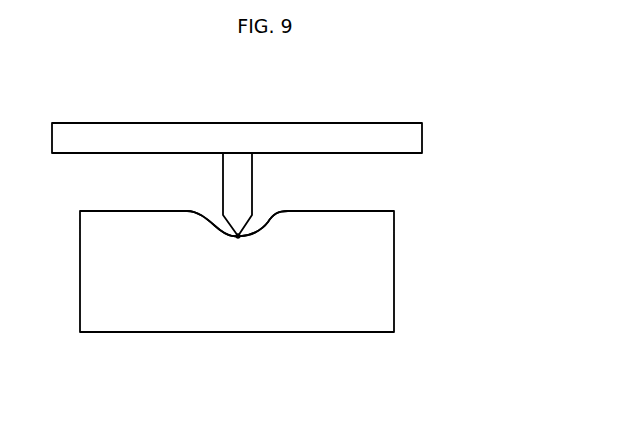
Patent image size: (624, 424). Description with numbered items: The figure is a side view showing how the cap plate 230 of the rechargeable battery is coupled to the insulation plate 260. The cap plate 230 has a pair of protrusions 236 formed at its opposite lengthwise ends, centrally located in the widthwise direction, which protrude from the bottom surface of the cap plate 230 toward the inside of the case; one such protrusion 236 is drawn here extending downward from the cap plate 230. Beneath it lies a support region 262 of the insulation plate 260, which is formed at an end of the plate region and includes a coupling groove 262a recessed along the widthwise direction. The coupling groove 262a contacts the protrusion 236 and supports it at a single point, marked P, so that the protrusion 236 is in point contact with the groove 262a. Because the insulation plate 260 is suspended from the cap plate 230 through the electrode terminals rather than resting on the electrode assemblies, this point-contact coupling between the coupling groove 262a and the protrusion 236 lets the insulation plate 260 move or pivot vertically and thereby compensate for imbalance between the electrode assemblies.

The cap plate 230 is at (147, 133).
The protrusion 236 is at (245, 168).
The insulation plate 260 is at (289, 299).
The support region 262 is at (242, 322).
The coupling groove 262a is at (258, 228).
The contact point P is at (238, 236).